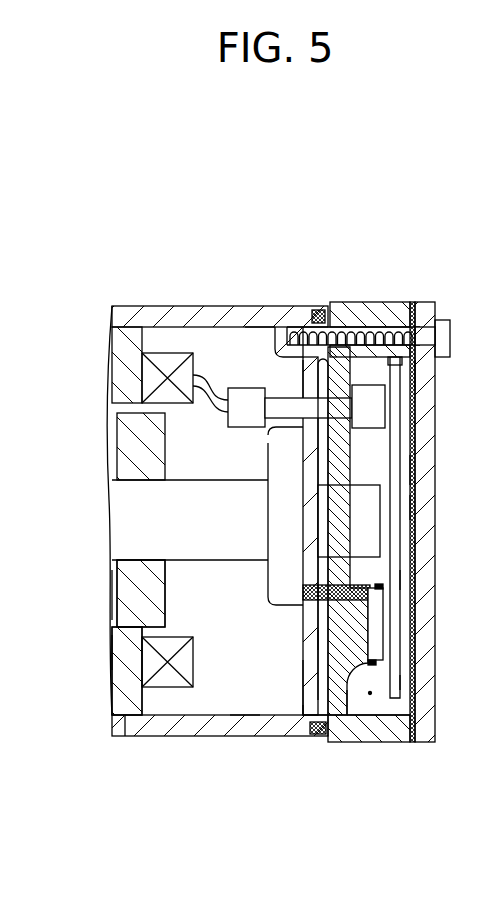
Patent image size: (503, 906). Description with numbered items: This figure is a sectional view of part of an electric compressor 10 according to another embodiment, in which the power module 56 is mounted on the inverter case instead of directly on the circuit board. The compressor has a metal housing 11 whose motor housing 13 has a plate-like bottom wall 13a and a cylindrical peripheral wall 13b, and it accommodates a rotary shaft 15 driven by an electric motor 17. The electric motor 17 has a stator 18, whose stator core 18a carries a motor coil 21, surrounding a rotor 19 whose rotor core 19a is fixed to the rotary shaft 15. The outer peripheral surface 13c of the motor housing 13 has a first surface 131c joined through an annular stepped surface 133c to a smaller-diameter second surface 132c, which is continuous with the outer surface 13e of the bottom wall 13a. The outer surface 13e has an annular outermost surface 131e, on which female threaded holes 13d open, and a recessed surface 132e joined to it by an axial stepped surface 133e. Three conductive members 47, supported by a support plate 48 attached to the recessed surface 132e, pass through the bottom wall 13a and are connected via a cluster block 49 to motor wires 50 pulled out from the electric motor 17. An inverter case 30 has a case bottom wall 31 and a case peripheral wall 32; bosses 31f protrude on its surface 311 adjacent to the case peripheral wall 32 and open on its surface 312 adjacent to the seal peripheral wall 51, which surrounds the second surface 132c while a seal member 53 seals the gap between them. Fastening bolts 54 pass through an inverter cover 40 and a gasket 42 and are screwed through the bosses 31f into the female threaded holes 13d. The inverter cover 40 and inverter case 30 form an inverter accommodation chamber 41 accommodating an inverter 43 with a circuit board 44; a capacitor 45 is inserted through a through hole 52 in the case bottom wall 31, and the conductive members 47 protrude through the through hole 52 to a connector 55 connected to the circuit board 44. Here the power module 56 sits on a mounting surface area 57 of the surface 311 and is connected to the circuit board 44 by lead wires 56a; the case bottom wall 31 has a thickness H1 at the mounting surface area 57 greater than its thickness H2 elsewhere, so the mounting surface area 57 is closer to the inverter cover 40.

The electric compressor 10 is at (107, 283).
The housing 11 is at (126, 303).
The motor housing 13 is at (239, 526).
The bottom wall 13a is at (305, 626).
The peripheral wall 13b is at (228, 304).
The outer peripheral surface 13c is at (190, 738).
The female threaded hole 13d is at (310, 306).
The outer surface 13e is at (322, 706).
The outermost surface 131e is at (285, 347).
The first surface 131c is at (246, 738).
The recessed surface 132e is at (292, 447).
The second surface 132c is at (343, 743).
The stepped surface 133e is at (303, 690).
The stepped surface 133c is at (312, 745).
The rotary shaft 15 is at (196, 561).
The electric motor 17 is at (140, 733).
The stator 18 is at (116, 711).
The stator core 18a is at (112, 648).
The rotor 19 is at (166, 600).
The rotor core 19a is at (117, 595).
The motor coil 21 is at (138, 684).
The inverter case 30 is at (352, 301).
The case bottom wall 31 is at (330, 656).
The boss 31f is at (418, 376).
The surface 311 is at (412, 720).
The surface 312 is at (318, 368).
The case peripheral wall 32 is at (396, 743).
The inverter cover 40 is at (432, 372).
The inverter accommodation chamber 41 is at (372, 693).
The gasket 42 is at (414, 744).
The inverter 43 is at (425, 470).
The circuit board 44 is at (425, 505).
The capacitor 45 is at (328, 512).
The conductive member 47 is at (266, 422).
The support plate 48 is at (351, 474).
The cluster block 49 is at (226, 415).
The motor wire 50 is at (206, 374).
The seal peripheral wall 51 is at (318, 309).
The through hole 52 is at (305, 585).
The seal member 53 is at (314, 737).
The fastening bolt 54 is at (443, 319).
The connector 55 is at (362, 430).
The power module 56 is at (385, 612).
The lead wire 56a is at (400, 580).
The mounting surface area 57 is at (401, 632).
The thickness H1 is at (317, 640).
The thickness H2 is at (317, 591).